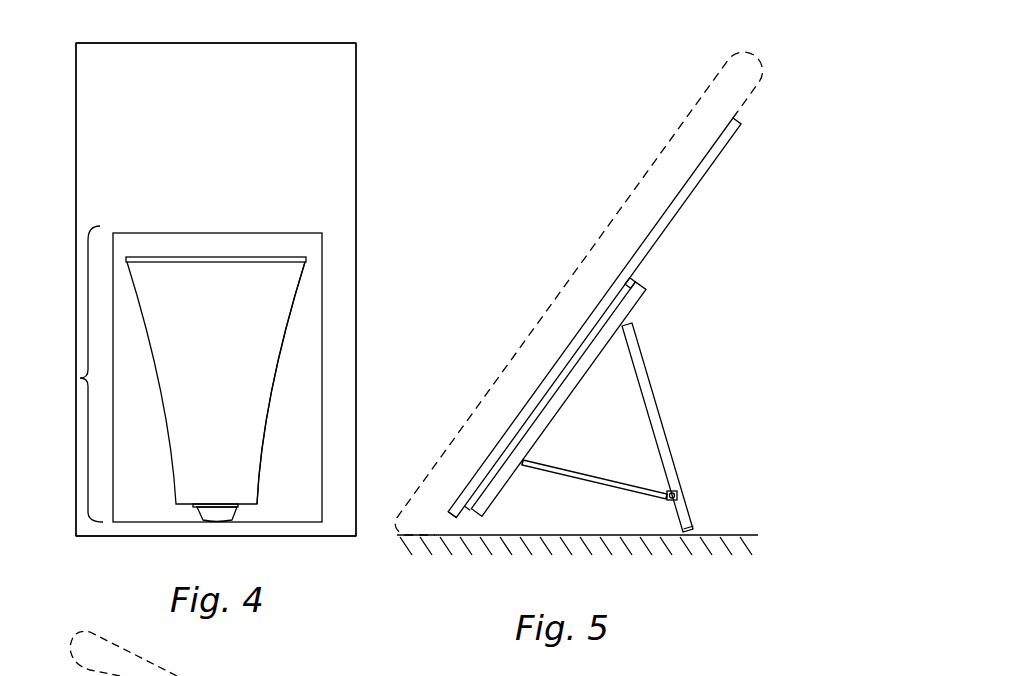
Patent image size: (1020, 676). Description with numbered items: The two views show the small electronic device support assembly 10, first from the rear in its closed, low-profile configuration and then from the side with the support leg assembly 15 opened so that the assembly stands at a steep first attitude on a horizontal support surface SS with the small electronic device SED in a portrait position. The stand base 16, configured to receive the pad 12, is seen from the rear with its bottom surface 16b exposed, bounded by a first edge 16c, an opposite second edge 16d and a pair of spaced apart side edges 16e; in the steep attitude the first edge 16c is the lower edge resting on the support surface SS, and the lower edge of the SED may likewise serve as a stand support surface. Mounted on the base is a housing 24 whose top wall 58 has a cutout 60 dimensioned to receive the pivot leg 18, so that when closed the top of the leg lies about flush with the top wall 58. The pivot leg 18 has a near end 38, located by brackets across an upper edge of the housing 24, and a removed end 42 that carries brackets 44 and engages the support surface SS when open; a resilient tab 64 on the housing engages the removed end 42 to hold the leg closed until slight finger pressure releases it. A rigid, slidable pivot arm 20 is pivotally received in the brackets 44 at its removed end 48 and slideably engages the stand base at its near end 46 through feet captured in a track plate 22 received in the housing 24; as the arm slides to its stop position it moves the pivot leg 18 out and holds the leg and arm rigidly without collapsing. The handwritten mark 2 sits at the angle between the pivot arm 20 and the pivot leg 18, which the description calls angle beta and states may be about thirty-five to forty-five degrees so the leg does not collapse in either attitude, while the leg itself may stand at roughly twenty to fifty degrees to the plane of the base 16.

In FIG. 4, the support assembly 10 is at (380, 99).
In FIG. 5, the pad 12 is at (736, 118).
In FIG. 4, the support leg assembly 15 is at (80, 378).
In FIG. 5, the support leg assembly 15 is at (697, 358).
In FIG. 4, the stand base 16 is at (357, 87).
In FIG. 4, the bottom surface 16b is at (228, 176).
In FIG. 4, the first edge 16c is at (328, 538).
In FIG. 5, the first edge 16c is at (448, 513).
In FIG. 4, the second edge 16d is at (262, 42).
In FIG. 4, the side edges 16e is at (357, 245).
In FIG. 4, the pivot leg 18 is at (223, 354).
In FIG. 5, the pivot leg 18 is at (660, 424).
In FIG. 5, the pivot arm 20 is at (577, 472).
In FIG. 5, the track plate 22 is at (628, 288).
In FIG. 4, the housing 24 is at (295, 396).
In FIG. 5, the housing 24 is at (626, 322).
In FIG. 4, the near end 38 is at (248, 257).
In FIG. 4, the removed end 42 is at (240, 510).
In FIG. 5, the removed end 42 is at (692, 531).
In FIG. 5, the brackets 44 is at (676, 494).
In FIG. 5, the near end 46 is at (523, 462).
In FIG. 5, the removed end 48 is at (664, 496).
In FIG. 4, the top wall 58 is at (303, 451).
In FIG. 4, the cutout 60 is at (285, 330).
In FIG. 4, the resilient tab 64 is at (198, 512).
In FIG. 5, the angle 2 is at (640, 407).
In FIG. 5, the small electronic device SED is at (578, 251).
In FIG. 5, the support surface SS is at (751, 546).